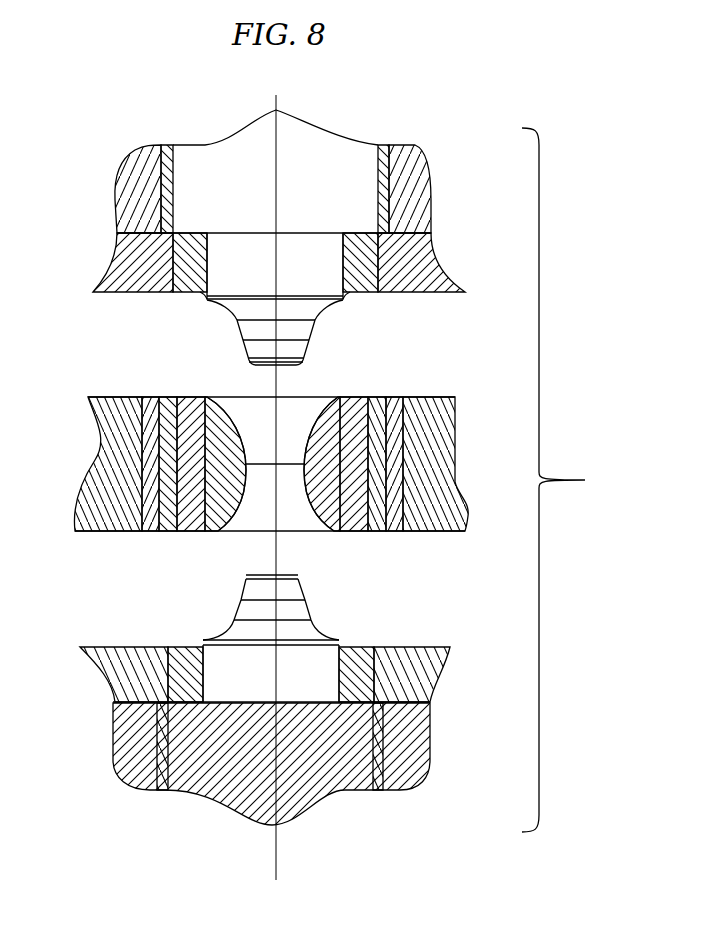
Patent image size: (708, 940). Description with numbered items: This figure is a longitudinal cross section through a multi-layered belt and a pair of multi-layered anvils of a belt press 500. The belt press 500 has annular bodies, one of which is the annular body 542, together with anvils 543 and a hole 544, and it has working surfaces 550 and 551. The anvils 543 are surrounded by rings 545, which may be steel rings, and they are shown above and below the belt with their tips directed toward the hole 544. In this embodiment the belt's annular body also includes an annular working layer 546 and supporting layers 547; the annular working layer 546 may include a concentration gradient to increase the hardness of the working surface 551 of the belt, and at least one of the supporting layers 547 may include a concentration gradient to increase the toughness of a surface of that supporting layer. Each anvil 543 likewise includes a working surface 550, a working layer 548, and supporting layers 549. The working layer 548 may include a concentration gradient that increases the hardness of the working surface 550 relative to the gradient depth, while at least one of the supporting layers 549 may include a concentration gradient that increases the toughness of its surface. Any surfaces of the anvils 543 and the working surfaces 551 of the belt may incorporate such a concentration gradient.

The belt press 500 is at (579, 480).
The annular body 542 is at (287, 470).
The anvil 543 is at (272, 470).
The hole 544 is at (300, 396).
The ring 545 is at (177, 648).
The annular working layer 546 is at (228, 516).
The supporting layer 547 is at (342, 533).
The working layer 548 is at (272, 470).
The supporting layer 549 is at (247, 353).
The working surface 550 is at (255, 373).
The working surface 551 is at (248, 505).